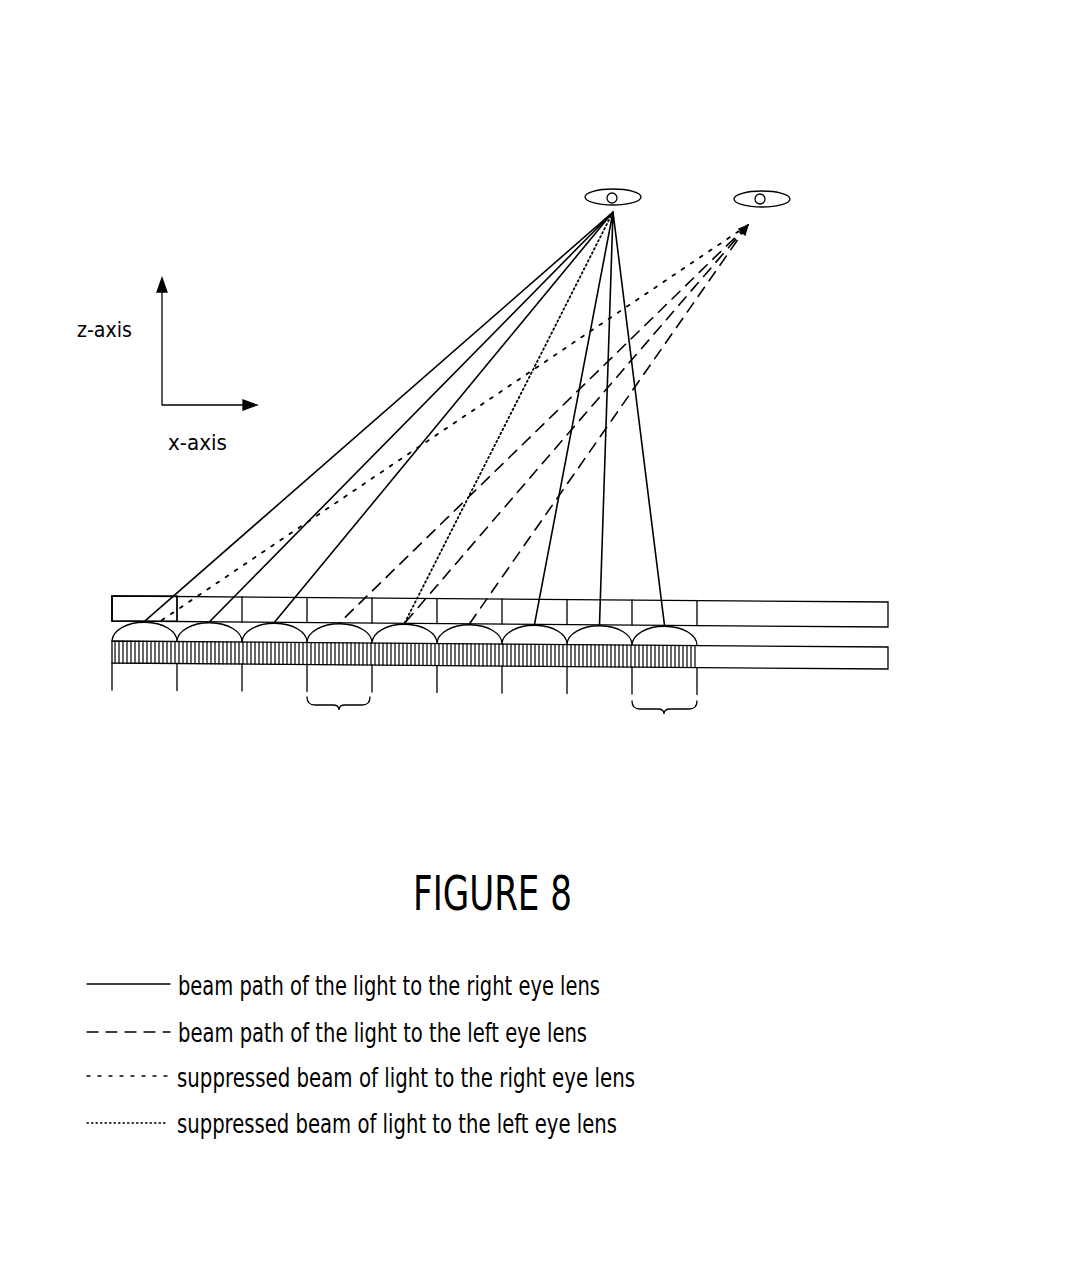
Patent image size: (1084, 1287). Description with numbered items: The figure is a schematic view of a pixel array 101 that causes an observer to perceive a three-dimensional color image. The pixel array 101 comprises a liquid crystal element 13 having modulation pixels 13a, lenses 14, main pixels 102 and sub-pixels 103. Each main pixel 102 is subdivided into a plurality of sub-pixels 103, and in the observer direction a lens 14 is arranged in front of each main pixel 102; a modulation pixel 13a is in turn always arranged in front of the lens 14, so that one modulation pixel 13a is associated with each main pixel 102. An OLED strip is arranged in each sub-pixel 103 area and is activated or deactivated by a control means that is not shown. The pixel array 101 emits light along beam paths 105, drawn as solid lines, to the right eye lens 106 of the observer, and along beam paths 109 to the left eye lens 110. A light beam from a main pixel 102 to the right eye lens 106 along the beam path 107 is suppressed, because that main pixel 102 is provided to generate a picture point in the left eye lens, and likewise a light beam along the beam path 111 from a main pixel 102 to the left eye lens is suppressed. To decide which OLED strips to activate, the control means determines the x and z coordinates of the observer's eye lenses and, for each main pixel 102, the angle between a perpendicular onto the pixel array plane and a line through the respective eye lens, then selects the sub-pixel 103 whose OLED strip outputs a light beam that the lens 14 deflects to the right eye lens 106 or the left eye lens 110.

The liquid crystal element 13 is at (528, 560).
The modulation pixel 13a is at (140, 597).
The lens 14 is at (473, 667).
The pixel array 101 is at (528, 658).
The main pixel 102 is at (340, 712).
The sub-pixel 103 is at (165, 670).
The beam path 105 is at (508, 337).
The right eye lens 106 is at (625, 190).
The beam path 107 is at (447, 548).
The beam path 109 is at (737, 247).
The left eye lens 110 is at (770, 193).
The beam path 111 is at (725, 233).